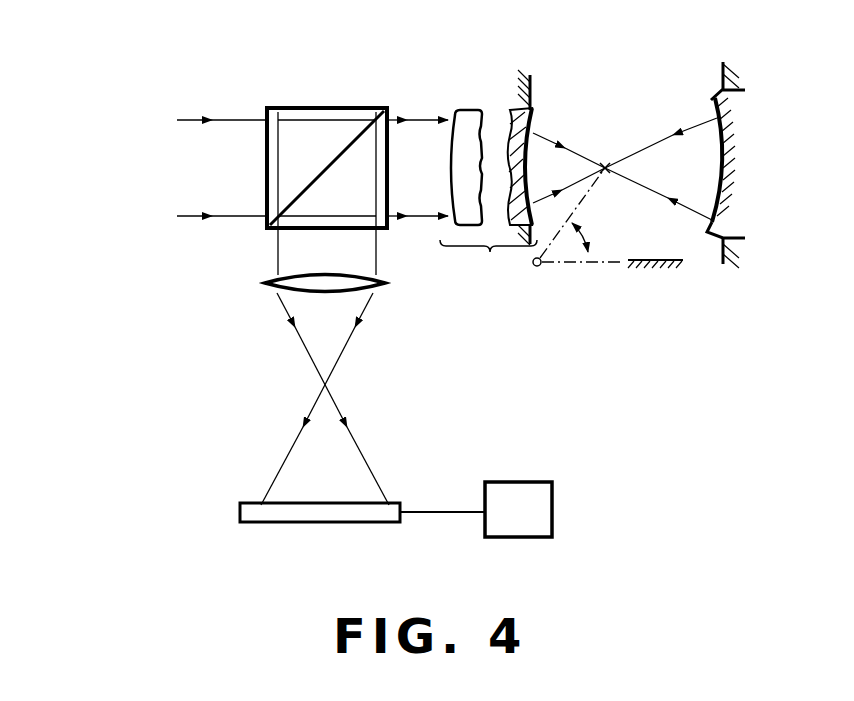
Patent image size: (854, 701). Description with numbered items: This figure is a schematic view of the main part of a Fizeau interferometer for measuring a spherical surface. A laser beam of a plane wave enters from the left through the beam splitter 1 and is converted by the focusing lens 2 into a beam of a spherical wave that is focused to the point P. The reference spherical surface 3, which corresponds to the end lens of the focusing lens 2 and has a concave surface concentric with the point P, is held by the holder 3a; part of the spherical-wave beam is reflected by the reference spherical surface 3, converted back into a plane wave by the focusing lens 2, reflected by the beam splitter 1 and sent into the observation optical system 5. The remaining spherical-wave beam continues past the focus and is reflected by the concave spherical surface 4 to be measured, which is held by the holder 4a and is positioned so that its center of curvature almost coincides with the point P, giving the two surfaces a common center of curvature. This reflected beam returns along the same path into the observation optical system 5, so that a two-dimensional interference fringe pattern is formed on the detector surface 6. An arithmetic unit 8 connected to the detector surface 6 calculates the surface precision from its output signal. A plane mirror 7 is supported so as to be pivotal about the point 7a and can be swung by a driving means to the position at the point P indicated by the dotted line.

The beam splitter 1 is at (352, 140).
The focusing lens 2 is at (488, 196).
The reference spherical surface 3 is at (538, 137).
The holder 3a is at (531, 86).
The spherical surface to be measured 4 is at (704, 120).
The holder 4a is at (721, 67).
The observation optical system 5 is at (218, 273).
The detector surface 6 is at (310, 520).
The plane mirror 7 is at (622, 150).
The pivot point 7a is at (537, 267).
The arithmetic unit 8 is at (526, 527).
The focal point P is at (605, 165).